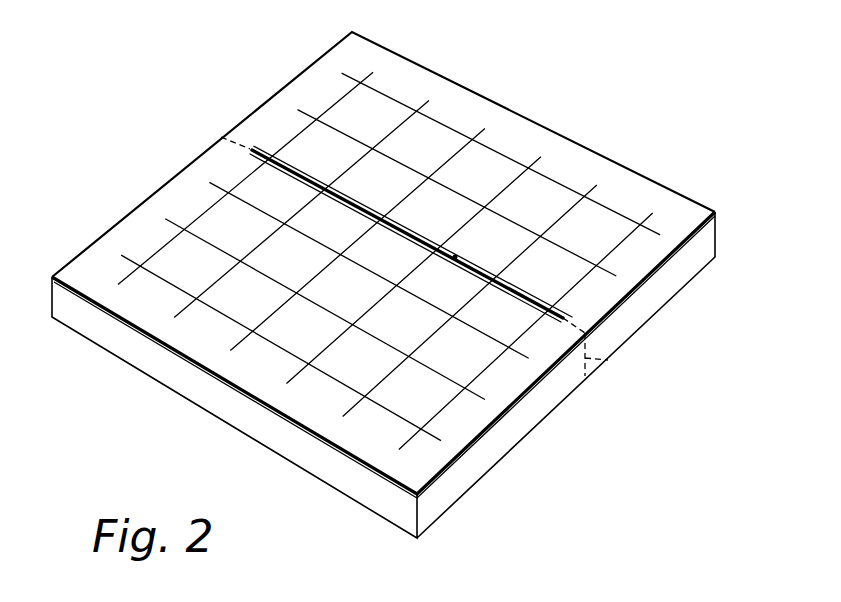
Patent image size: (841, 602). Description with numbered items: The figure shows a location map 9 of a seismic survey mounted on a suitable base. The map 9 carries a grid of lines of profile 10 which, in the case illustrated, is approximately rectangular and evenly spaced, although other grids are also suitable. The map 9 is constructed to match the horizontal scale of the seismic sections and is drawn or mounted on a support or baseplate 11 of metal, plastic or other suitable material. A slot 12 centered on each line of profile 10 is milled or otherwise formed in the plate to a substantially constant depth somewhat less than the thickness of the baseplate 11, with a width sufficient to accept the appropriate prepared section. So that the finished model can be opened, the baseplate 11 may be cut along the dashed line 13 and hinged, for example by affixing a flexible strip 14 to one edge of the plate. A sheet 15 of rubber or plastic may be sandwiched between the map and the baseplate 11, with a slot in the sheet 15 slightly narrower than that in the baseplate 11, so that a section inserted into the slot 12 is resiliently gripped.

The location map 9 is at (489, 166).
The lines of profile 10 is at (395, 353).
The baseplate 11 is at (523, 425).
The slot 12 is at (455, 257).
The dashed line 13 is at (608, 360).
The flexible strip 14 is at (105, 233).
The sheet 15 is at (613, 308).